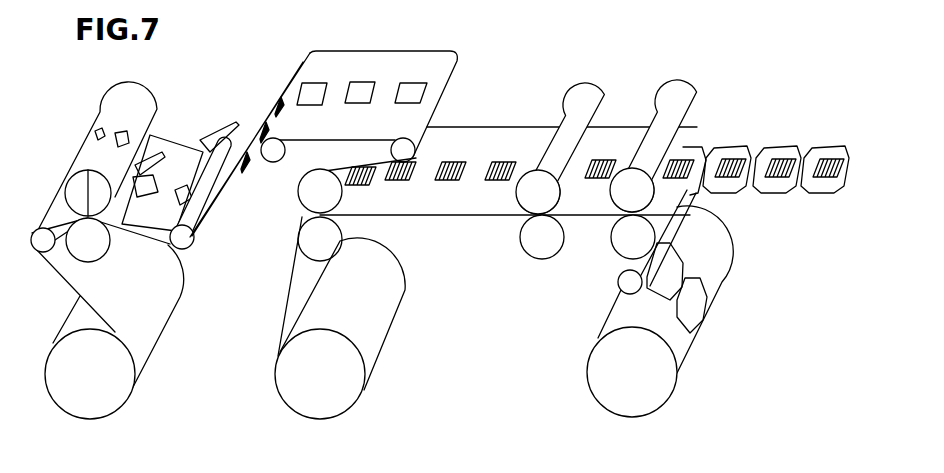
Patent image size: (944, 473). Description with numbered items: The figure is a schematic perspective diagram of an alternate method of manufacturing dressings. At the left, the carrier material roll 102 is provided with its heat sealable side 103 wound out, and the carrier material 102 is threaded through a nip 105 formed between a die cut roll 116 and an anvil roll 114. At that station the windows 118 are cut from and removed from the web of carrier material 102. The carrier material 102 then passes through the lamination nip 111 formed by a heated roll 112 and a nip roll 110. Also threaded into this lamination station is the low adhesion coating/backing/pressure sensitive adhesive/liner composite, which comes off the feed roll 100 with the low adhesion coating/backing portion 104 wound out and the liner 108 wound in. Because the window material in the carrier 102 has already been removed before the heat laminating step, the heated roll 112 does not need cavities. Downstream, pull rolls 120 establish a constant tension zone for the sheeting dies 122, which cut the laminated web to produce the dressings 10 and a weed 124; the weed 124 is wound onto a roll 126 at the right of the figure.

The dressings 10 is at (830, 148).
The feed roll 100 is at (345, 373).
The carrier material roll 102 is at (102, 402).
The heat sealable side 103 is at (157, 323).
The low adhesion coating/backing portion 104 is at (383, 263).
The nip 105 is at (88, 170).
The liner 108 is at (283, 307).
The nip roll 110 is at (308, 242).
The lamination nip 111 is at (318, 216).
The heated roll 112 is at (303, 200).
The anvil roll 114 is at (87, 243).
The die cut roll 116 is at (78, 193).
The windows 118 is at (152, 163).
The pull rolls 120 is at (578, 88).
The sheeting dies 122 is at (680, 90).
The weed 124 is at (712, 265).
The roll 126 is at (602, 383).